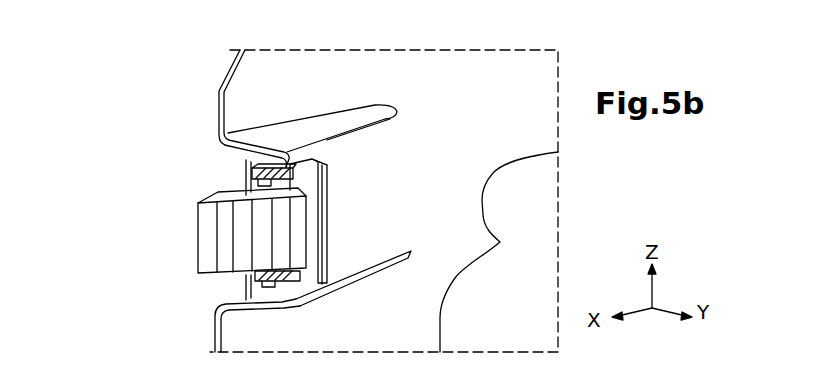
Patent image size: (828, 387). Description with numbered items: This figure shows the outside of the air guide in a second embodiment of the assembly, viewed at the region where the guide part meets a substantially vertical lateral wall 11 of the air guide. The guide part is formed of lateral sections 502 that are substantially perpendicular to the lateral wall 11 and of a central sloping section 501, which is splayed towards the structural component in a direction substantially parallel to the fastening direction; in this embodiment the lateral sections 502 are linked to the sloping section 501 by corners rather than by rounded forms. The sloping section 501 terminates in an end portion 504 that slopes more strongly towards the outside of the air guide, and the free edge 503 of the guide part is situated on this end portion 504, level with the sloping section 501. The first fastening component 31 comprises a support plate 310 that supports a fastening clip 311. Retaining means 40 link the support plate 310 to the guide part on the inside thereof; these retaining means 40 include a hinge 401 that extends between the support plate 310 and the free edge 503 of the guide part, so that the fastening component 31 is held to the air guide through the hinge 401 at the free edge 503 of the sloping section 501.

The lateral wall 11 is at (505, 84).
The lateral sections 502 is at (269, 133).
The central sloping section 501 is at (367, 160).
The free edge 503 is at (332, 193).
The end portion 504 is at (327, 155).
The first fastening component 31 is at (165, 215).
The support plate 310 is at (252, 166).
The fastening clip 311 is at (207, 213).
The hinge 401 is at (292, 276).
The retaining means 40 is at (338, 250).